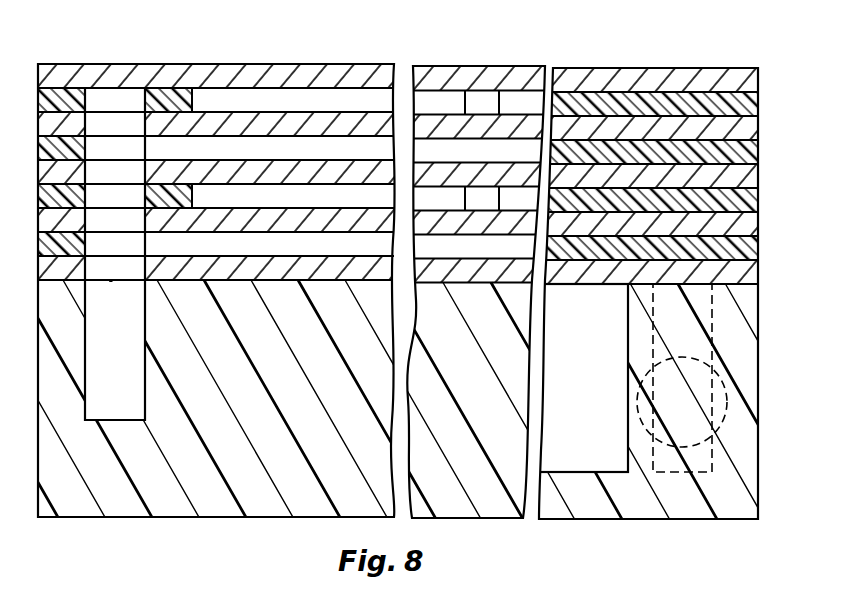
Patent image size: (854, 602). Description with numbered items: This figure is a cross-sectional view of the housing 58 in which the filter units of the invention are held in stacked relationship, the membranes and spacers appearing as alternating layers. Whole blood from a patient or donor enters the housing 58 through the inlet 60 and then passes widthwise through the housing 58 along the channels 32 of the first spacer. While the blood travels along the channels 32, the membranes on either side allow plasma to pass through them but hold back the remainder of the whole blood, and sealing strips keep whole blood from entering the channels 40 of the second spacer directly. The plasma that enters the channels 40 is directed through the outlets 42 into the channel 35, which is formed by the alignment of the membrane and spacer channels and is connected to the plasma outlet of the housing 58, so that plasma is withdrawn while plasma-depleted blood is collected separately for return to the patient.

The channels of spacer 32 is at (228, 193).
The channel 35 is at (138, 125).
The channels of spacer 40 is at (242, 243).
The outlets 42 is at (475, 195).
The housing 58 is at (670, 52).
The inlet 60 is at (728, 400).